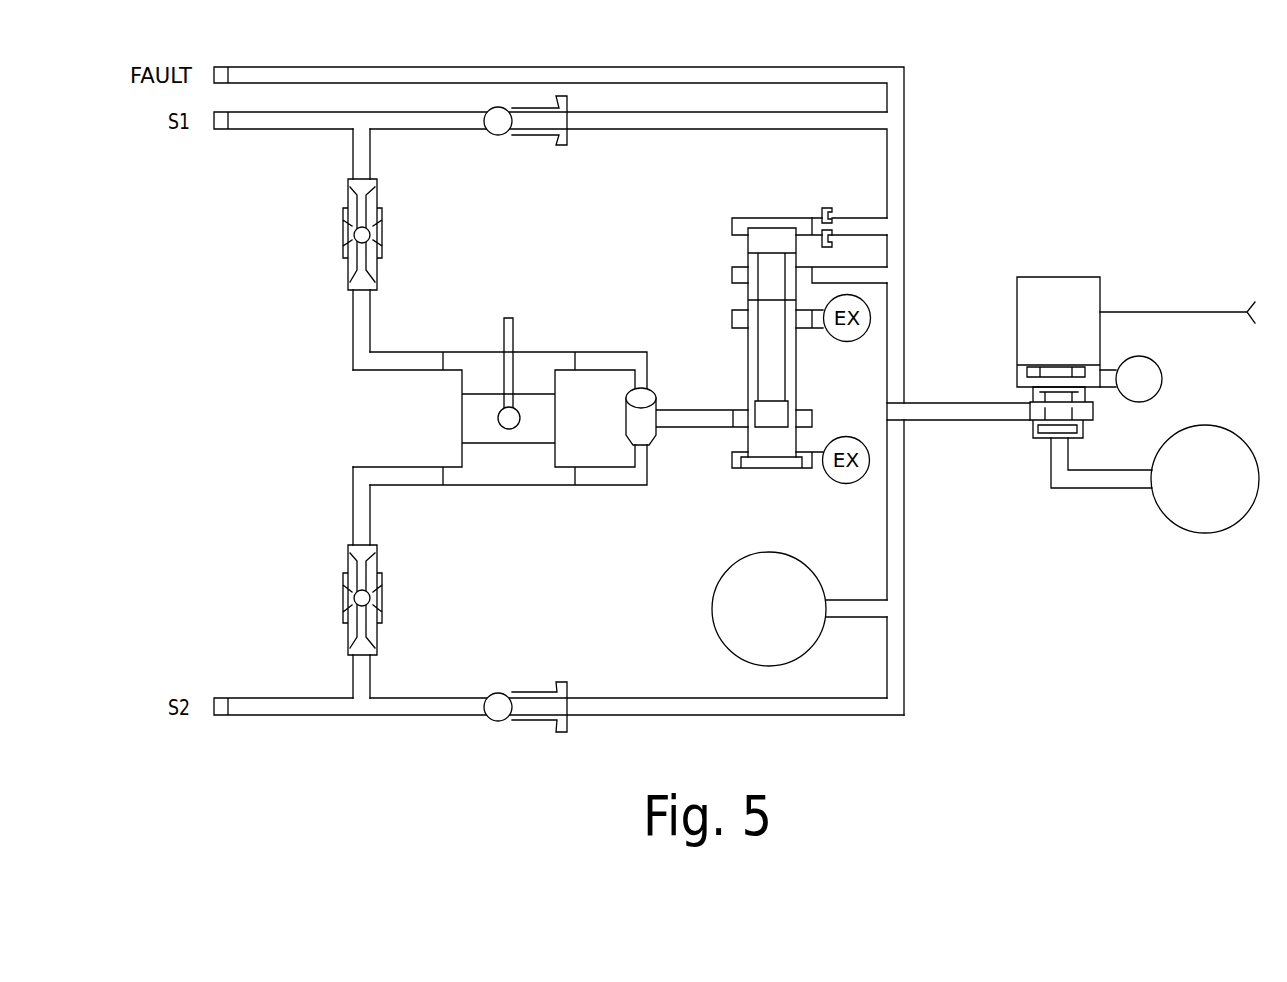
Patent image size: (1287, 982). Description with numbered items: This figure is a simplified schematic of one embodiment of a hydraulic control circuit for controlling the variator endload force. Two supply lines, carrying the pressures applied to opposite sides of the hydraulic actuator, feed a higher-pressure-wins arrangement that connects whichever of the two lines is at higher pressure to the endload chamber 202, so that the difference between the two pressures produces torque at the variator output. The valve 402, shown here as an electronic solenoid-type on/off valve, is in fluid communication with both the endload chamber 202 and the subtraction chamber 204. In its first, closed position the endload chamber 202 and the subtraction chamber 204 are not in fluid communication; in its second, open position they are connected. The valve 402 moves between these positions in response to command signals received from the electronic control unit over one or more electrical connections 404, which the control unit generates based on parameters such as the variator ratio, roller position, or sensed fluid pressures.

The endload chamber 202 is at (743, 553).
The subtraction chamber 204 is at (1222, 428).
The valve 402 is at (1100, 277).
The electrical connections 404 is at (1190, 312).